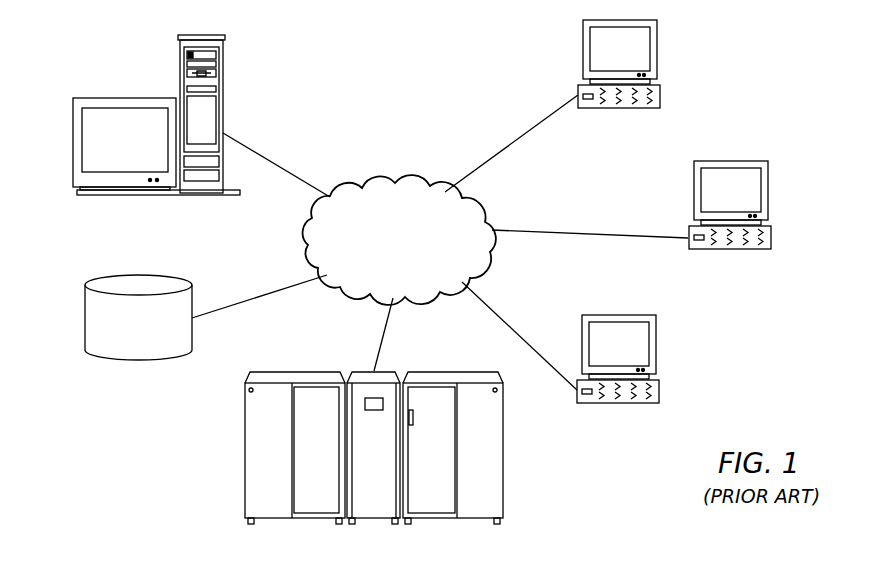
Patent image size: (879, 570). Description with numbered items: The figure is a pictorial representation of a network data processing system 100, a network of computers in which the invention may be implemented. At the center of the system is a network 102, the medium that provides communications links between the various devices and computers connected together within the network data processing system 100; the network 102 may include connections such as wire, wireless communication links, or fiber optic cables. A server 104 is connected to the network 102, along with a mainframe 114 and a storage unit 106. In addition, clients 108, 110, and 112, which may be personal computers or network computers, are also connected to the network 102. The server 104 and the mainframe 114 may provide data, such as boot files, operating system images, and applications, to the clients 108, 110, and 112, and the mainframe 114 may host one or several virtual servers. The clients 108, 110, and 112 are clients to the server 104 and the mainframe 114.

The network data processing system 100 is at (163, 435).
The network 102 is at (383, 254).
The server 104 is at (181, 58).
The storage unit 106 is at (85, 317).
The client 108 is at (657, 50).
The client 110 is at (768, 190).
The client 112 is at (656, 347).
The mainframe 114 is at (503, 480).